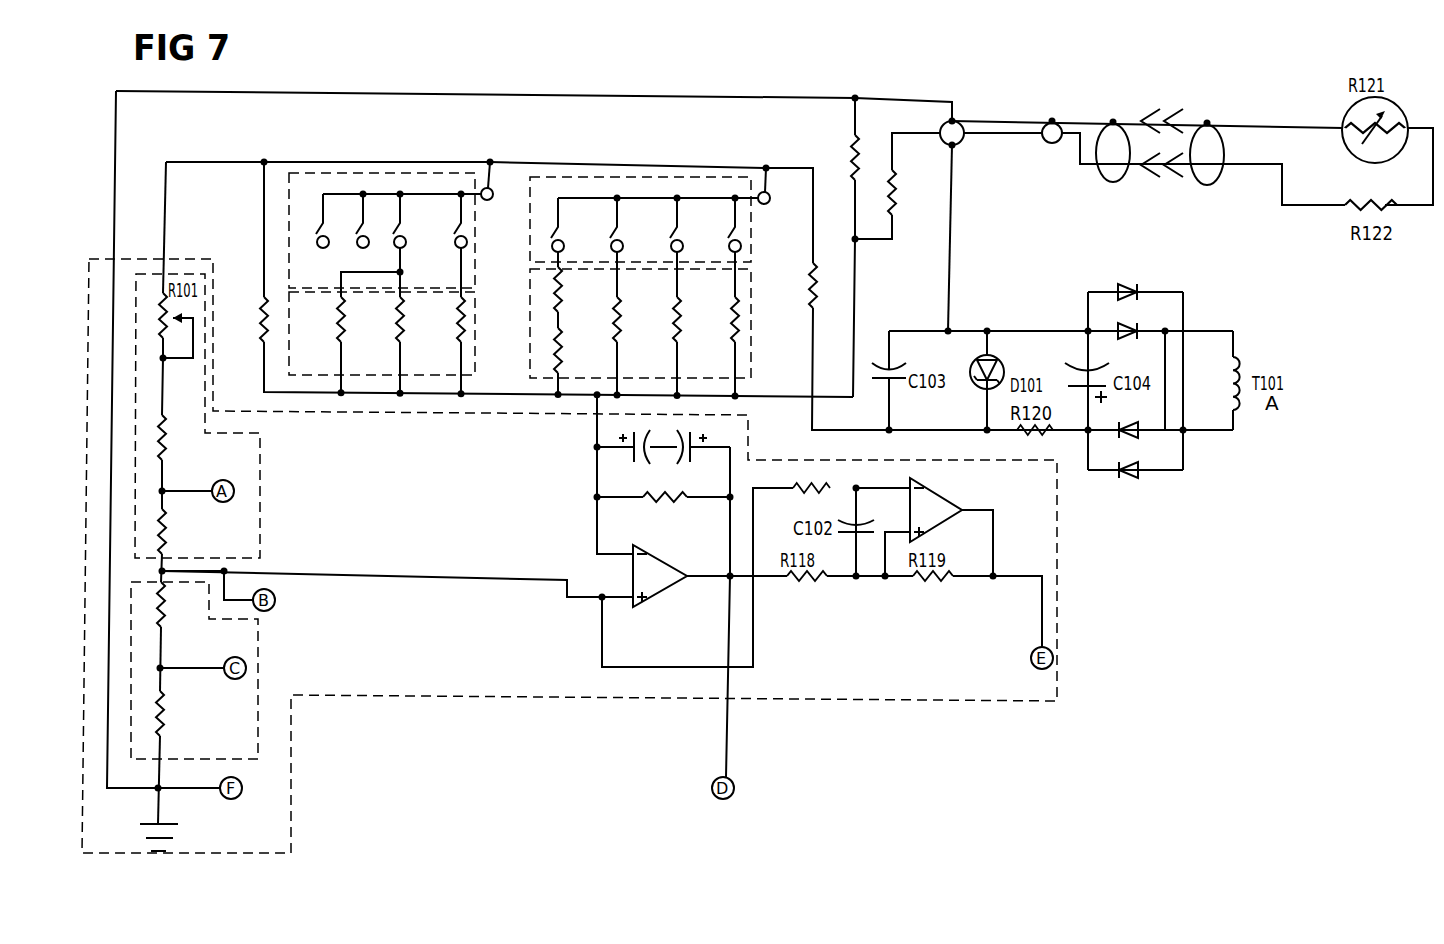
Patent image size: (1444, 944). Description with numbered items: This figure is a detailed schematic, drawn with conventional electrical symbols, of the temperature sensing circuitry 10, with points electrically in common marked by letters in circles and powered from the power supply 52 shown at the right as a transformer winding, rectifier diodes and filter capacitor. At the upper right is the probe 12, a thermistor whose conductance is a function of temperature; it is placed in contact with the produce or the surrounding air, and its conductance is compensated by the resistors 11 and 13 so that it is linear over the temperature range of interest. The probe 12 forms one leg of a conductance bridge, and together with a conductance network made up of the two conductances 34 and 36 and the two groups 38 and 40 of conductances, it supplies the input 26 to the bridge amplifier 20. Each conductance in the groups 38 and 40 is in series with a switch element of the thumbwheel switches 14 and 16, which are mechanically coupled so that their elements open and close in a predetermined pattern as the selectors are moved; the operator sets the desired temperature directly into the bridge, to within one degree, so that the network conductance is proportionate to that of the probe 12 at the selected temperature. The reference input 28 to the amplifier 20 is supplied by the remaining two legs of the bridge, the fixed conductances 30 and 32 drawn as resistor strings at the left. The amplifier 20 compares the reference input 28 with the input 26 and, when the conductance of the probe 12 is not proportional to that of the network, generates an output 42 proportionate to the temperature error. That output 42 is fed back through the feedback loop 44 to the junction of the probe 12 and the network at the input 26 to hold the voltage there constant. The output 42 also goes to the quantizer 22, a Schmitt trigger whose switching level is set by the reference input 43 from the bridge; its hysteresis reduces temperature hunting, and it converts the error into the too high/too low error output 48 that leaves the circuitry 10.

The temperature sensing circuitry 10 is at (1062, 703).
The resistor 11 is at (898, 205).
The probe 12 is at (1398, 108).
The resistor 13 is at (857, 143).
The switch 14 is at (477, 253).
The switch 16 is at (752, 247).
The bridge amplifier 20 is at (663, 597).
The quantizer 22 is at (940, 523).
The input 26 is at (625, 554).
The reference input 28 is at (495, 578).
The fixed conductance 30 is at (260, 477).
The fixed conductance 32 is at (258, 648).
The conductance 34 is at (262, 297).
The conductance 36 is at (815, 290).
The group of conductances 38 is at (475, 333).
The group of conductances 40 is at (750, 338).
The output 42 is at (712, 578).
The reference input 43 is at (753, 642).
The feedback loop 44 is at (725, 498).
The error output 48 is at (1042, 631).
The power supply 52 is at (1200, 318).